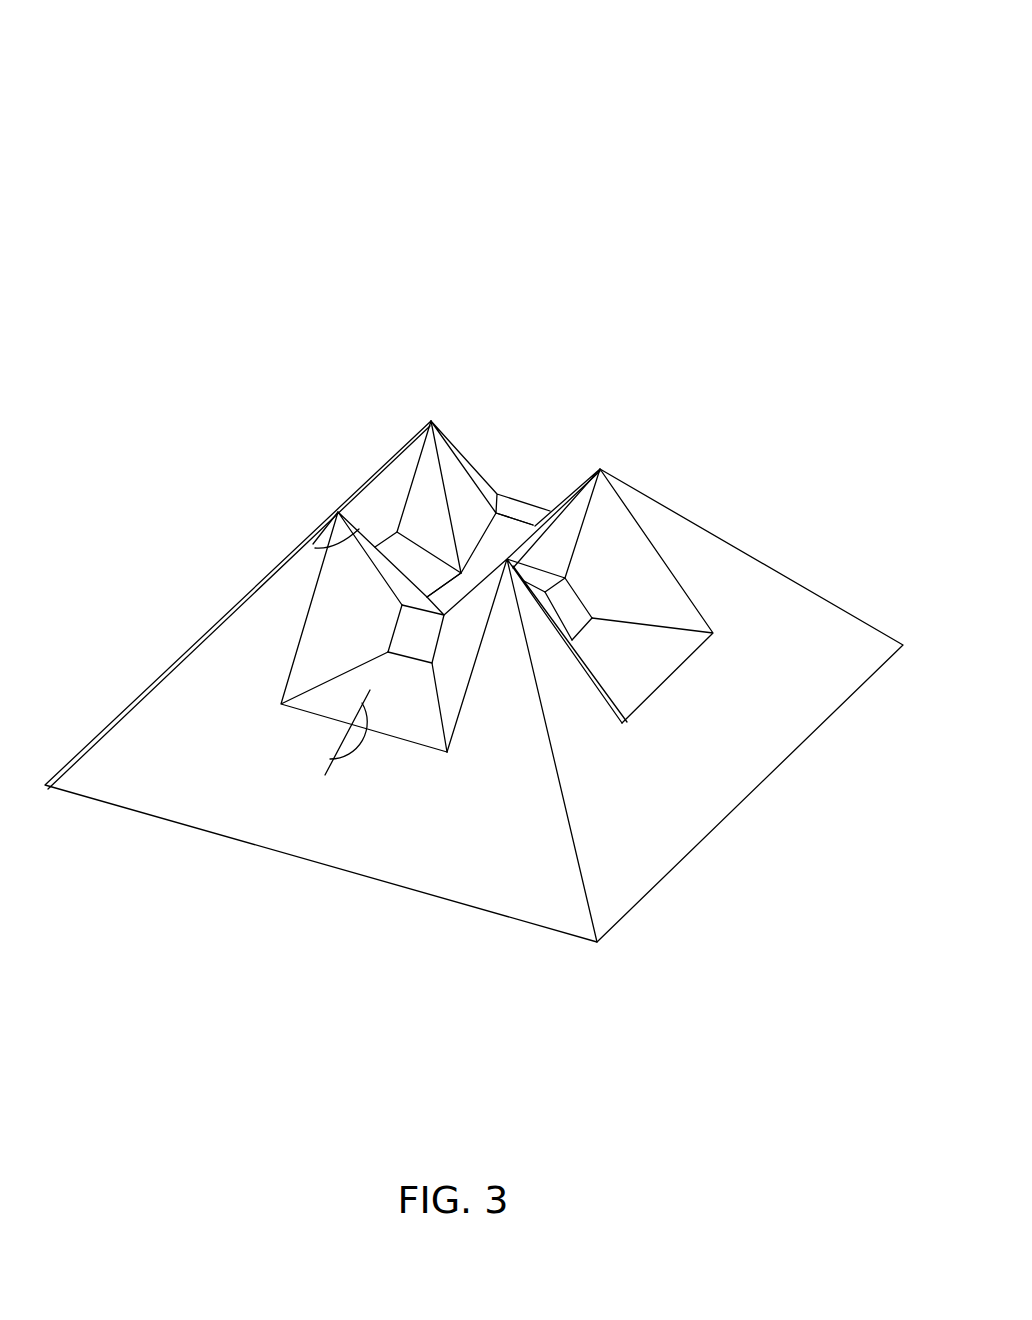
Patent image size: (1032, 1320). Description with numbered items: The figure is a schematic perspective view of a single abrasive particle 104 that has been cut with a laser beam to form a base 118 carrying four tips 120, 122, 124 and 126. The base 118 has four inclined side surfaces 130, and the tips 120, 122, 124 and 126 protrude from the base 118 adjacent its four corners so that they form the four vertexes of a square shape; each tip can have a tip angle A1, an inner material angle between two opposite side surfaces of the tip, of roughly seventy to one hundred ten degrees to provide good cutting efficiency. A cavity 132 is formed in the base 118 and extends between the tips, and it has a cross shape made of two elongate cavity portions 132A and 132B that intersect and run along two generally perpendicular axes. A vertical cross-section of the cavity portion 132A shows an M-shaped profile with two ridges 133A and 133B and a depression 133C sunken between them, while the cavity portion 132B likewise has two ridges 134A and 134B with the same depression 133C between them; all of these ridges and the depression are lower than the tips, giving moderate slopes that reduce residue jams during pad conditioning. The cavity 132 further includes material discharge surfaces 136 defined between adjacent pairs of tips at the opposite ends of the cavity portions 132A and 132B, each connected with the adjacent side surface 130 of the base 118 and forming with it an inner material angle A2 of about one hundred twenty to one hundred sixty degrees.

The abrasive particle 104 is at (788, 90).
The base 118 is at (807, 609).
The tip 120 is at (407, 407).
The tip 122 is at (617, 457).
The tip 124 is at (550, 677).
The tip 126 is at (305, 503).
The inclined side surface 130 is at (195, 792).
The cavity 132 is at (428, 598).
The cavity portion 132A is at (327, 695).
The cavity portion 132B is at (640, 600).
The ridge 133A is at (532, 530).
The ridge 133B is at (403, 605).
The depression 133C is at (461, 580).
The ridge 134A is at (383, 542).
The ridge 134B is at (572, 592).
The material discharge surface 136 is at (421, 730).
The tip angle A1 is at (336, 539).
The inner material angle A2 is at (357, 732).